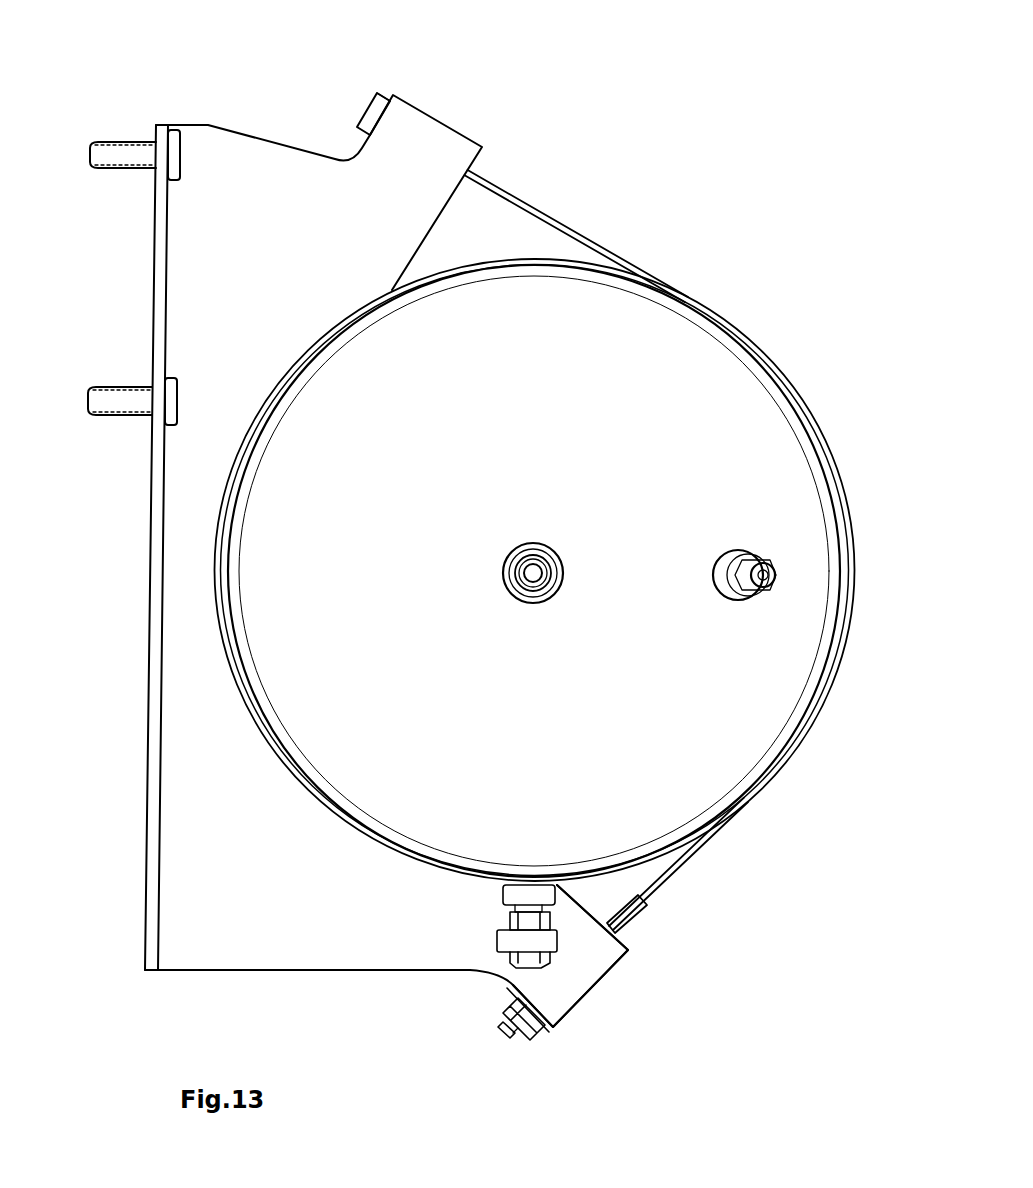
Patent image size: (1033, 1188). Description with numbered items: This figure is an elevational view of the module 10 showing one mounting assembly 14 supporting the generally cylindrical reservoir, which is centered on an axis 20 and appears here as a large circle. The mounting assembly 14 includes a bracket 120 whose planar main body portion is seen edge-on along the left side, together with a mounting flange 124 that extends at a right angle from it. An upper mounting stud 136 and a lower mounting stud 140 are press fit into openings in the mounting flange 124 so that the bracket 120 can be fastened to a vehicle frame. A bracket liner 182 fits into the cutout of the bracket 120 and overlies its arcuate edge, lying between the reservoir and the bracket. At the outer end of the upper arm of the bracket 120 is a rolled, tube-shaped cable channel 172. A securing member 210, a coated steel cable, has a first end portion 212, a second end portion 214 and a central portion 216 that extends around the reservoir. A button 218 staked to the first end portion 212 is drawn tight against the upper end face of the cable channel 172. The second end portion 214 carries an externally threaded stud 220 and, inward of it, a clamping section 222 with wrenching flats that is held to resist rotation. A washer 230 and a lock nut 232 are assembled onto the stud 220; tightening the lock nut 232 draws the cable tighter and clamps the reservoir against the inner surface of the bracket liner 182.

The module 10 is at (836, 402).
The mounting assembly 14 is at (95, 863).
The axis 20 is at (692, 378).
The bracket 120 is at (140, 681).
The mounting flange 124 is at (160, 597).
The upper mounting stud 136 is at (128, 160).
The lower mounting stud 140 is at (115, 395).
The cable channel 172 is at (445, 122).
The bracket liner 182 is at (277, 390).
The securing member 210 is at (684, 883).
The first end portion 212 is at (397, 84).
The second end portion 214 is at (578, 1053).
The central portion 216 is at (560, 220).
The button 218 is at (362, 112).
The externally threaded stud 220 is at (514, 1034).
The clamping section 222 is at (645, 926).
The washer 230 is at (517, 990).
The lock nut 232 is at (510, 1012).